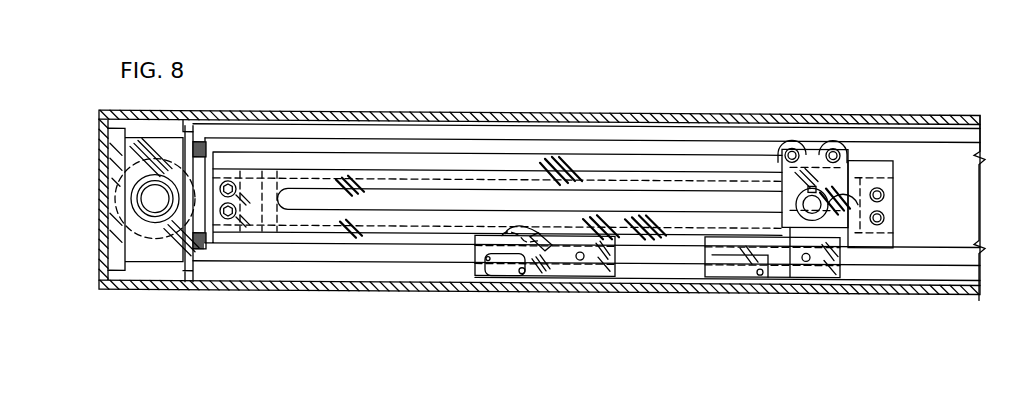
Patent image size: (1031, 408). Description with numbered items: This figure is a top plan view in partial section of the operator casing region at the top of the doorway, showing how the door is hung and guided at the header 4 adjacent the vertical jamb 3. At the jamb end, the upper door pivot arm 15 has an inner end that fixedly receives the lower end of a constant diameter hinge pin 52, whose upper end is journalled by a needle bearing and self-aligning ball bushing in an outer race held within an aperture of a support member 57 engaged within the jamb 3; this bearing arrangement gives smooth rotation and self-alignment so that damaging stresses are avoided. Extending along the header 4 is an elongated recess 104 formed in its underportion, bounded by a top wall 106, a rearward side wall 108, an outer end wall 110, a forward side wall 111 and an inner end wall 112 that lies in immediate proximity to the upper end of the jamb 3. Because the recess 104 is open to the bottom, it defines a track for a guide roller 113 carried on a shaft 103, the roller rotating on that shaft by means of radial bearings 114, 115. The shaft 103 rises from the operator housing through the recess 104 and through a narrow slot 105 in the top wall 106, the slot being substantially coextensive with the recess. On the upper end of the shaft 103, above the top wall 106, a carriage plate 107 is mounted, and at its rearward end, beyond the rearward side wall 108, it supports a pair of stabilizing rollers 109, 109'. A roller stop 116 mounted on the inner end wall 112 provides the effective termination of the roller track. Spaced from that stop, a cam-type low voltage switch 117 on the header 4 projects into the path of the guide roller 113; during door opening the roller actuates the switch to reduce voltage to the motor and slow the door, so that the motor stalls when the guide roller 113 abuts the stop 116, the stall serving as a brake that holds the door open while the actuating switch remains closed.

The vertical jamb 3 is at (141, 290).
The header 4 is at (977, 181).
The upper door pivot arm 15 is at (203, 237).
The hinge pin 52 is at (153, 207).
The support member 57 is at (113, 186).
The shaft 103 is at (837, 212).
The elongated recess 104 is at (468, 199).
The slot 105 is at (528, 198).
The top wall 106 is at (610, 182).
The carriage plate 107 is at (810, 148).
The rearward side wall 108 is at (893, 184).
The stabilizing roller 109 is at (825, 111).
The stabilizing roller 109' is at (866, 130).
The outer end wall 110 is at (893, 206).
The forward side wall 111 is at (893, 229).
The inner end wall 112 is at (213, 182).
The guide roller 113 is at (794, 235).
The radial bearing 114 is at (797, 200).
The radial bearing 115 is at (803, 213).
The roller stop 116 is at (262, 198).
The cam-type low voltage switch 117 is at (515, 212).